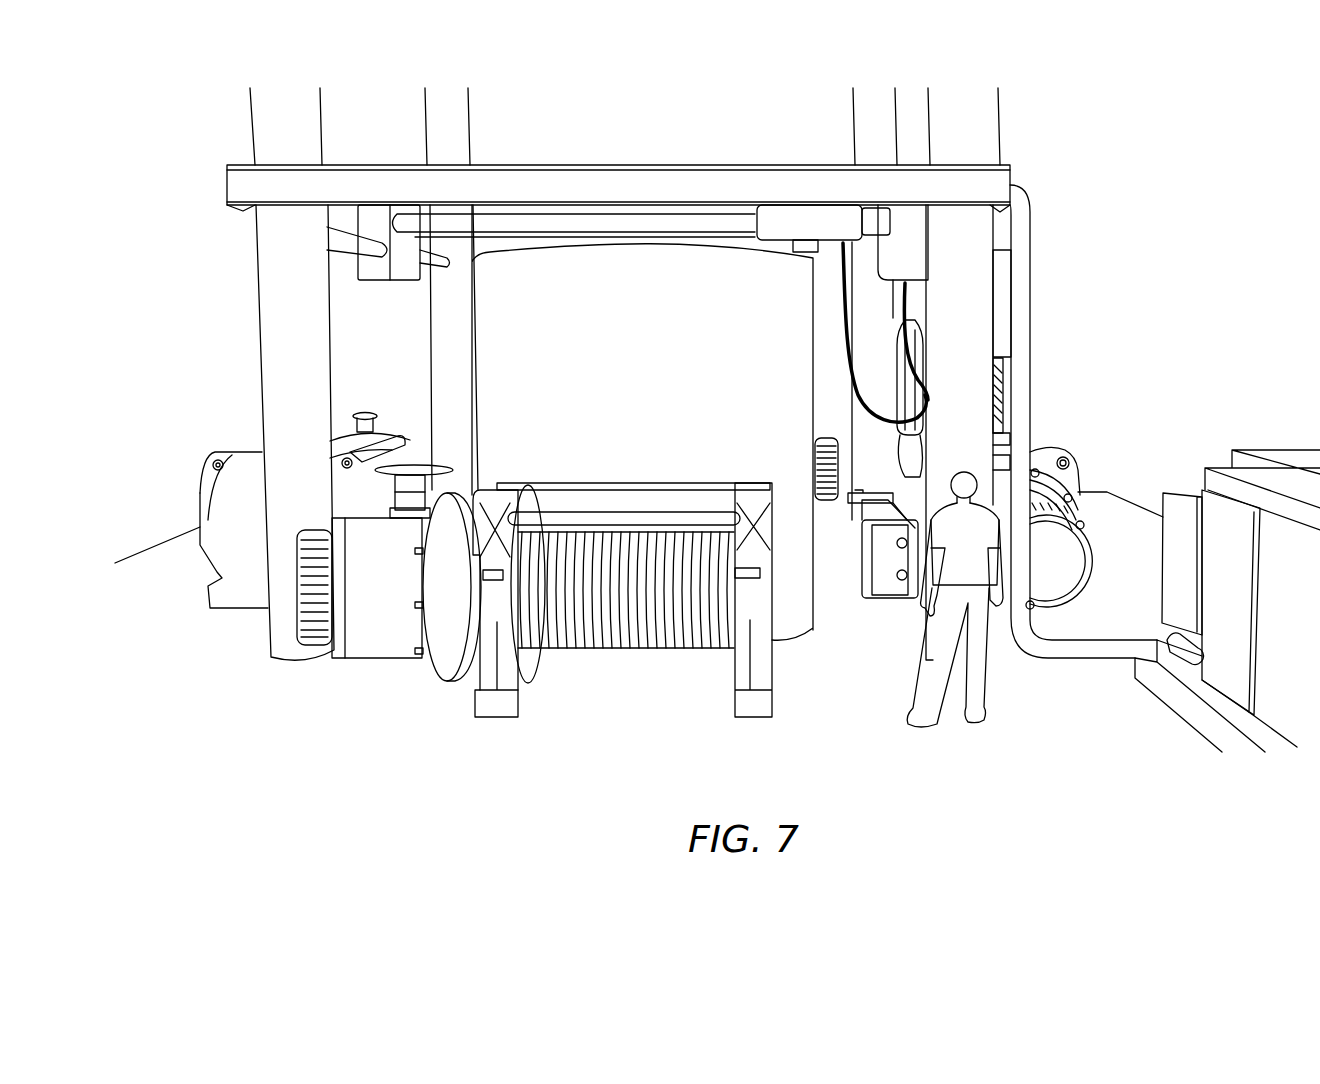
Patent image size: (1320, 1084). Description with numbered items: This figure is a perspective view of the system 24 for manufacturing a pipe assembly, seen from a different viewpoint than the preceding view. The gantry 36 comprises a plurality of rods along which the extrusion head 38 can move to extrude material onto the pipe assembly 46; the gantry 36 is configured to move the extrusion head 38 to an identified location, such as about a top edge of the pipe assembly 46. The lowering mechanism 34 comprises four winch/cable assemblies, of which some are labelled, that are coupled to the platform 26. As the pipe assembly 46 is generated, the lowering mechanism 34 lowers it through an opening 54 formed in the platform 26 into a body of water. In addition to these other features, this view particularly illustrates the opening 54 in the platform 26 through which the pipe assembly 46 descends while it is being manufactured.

The system 24 is at (1022, 80).
The platform 26 is at (1072, 733).
The lowering mechanism 34 is at (235, 515).
The gantry 36 is at (398, 262).
The extrusion head 38 is at (805, 255).
The pipe assembly 46 is at (660, 405).
The opening 54 is at (826, 598).